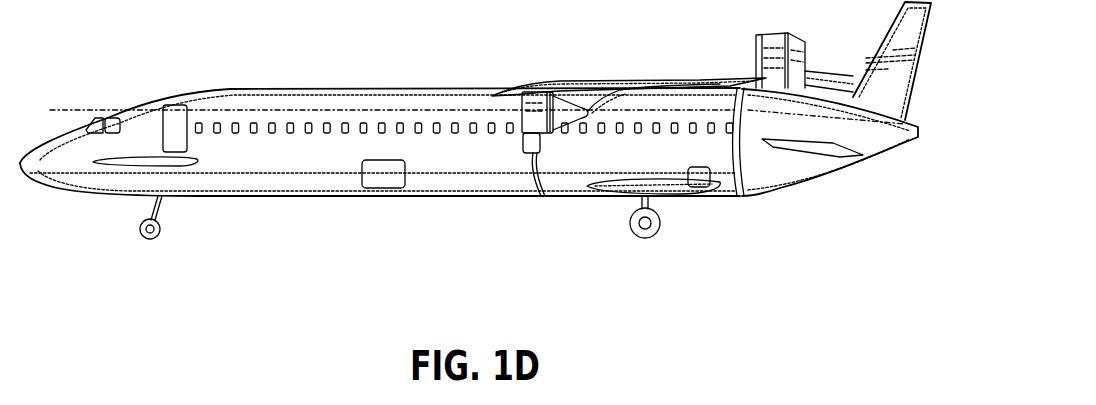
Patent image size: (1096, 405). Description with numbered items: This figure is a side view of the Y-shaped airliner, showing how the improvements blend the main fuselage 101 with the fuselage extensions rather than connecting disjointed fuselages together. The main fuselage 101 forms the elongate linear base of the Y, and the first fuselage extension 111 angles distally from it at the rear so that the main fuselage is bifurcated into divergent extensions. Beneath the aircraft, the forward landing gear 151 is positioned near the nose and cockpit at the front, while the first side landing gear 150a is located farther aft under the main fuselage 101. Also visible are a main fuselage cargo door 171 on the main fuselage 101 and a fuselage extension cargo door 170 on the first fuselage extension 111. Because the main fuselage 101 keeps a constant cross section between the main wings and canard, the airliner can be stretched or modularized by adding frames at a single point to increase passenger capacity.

The main fuselage 101 is at (338, 158).
The first fuselage extension 111 is at (743, 160).
The first side landing gear 150a is at (630, 232).
The forward landing gear 151 is at (160, 232).
The fuselage extension cargo door 170 is at (700, 176).
The main fuselage cargo door 171 is at (390, 180).